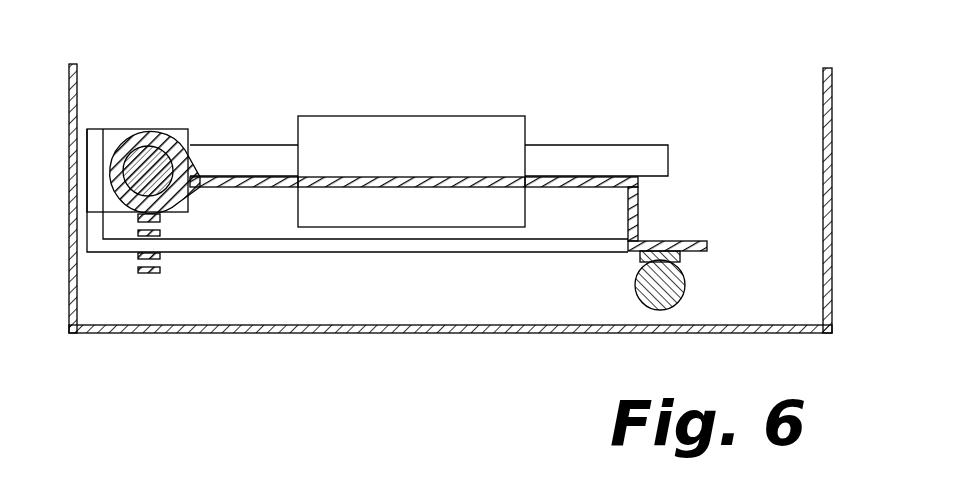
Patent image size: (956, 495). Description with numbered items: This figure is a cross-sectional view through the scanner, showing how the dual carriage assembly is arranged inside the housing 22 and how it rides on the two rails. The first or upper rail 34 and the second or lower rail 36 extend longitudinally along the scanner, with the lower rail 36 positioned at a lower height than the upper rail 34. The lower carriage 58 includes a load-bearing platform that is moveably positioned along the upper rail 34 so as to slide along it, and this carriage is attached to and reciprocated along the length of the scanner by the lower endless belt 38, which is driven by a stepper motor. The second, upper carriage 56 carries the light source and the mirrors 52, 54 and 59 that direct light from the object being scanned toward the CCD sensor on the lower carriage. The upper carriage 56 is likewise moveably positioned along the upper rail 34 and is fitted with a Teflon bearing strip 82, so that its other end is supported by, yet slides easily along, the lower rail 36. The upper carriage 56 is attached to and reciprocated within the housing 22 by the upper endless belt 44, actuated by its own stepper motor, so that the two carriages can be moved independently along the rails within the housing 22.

The housing 22 is at (833, 178).
The first rail 34 is at (150, 163).
The second rail 36 is at (635, 287).
The lower endless belt 38 is at (137, 265).
The upper endless belt 44 is at (137, 227).
The mirror 52 is at (242, 158).
The mirror 54 is at (373, 145).
The upper carriage 56 is at (640, 212).
The lower carriage 58 is at (293, 244).
The mirror 59 is at (453, 205).
The Teflon bearing strip 82 is at (685, 259).